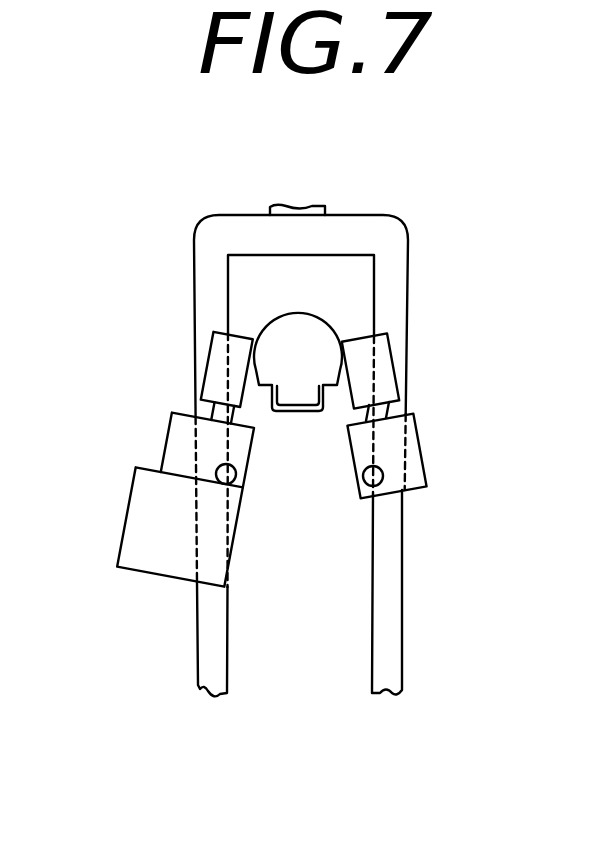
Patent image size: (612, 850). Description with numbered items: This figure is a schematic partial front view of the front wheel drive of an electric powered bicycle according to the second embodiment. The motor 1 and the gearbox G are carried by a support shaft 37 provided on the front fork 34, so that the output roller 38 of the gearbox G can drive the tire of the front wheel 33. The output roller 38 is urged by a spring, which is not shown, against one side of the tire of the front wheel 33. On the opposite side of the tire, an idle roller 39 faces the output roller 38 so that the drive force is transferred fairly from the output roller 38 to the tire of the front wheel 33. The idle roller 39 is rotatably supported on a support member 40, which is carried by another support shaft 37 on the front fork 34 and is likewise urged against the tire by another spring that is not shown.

The motor 1 is at (147, 530).
The gearbox G is at (175, 447).
The front wheel 33 is at (303, 342).
The front fork 34 is at (388, 589).
The support shaft 37 is at (360, 477).
The output roller 38 is at (217, 373).
The idle roller 39 is at (382, 380).
The support member 40 is at (412, 462).